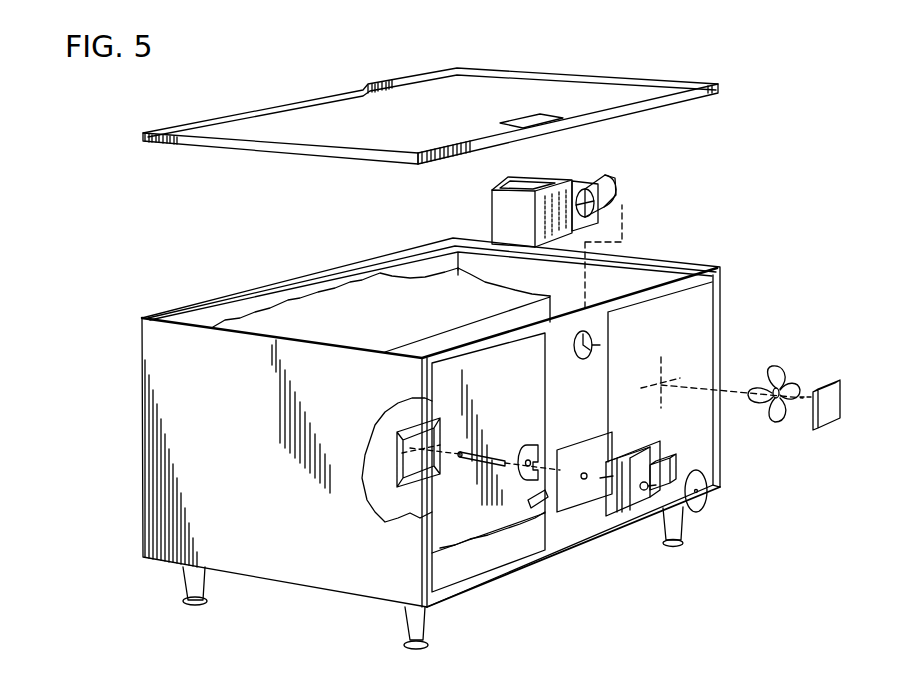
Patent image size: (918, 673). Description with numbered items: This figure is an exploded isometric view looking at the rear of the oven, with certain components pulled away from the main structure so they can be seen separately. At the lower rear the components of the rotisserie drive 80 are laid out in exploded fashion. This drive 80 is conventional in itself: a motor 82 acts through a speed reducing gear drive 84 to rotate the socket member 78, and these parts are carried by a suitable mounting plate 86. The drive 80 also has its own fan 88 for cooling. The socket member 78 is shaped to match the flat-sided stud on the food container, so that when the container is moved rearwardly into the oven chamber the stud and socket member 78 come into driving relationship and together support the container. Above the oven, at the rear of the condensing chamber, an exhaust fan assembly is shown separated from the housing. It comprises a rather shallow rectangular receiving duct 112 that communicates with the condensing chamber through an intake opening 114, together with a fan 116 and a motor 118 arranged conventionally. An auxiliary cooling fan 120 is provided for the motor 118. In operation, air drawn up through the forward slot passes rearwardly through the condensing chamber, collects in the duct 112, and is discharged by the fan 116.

The socket member 78 is at (478, 463).
The rotisserie drive 80 is at (644, 528).
The motor 82 is at (665, 476).
The speed reducing gear drive 84 is at (621, 515).
The mounting plate 86 is at (588, 448).
The fan 88 is at (706, 499).
The receiving duct 112 is at (492, 211).
The intake opening 114 is at (535, 183).
The fan 116 is at (588, 197).
The motor 118 is at (613, 190).
The auxiliary cooling fan 120 is at (780, 370).